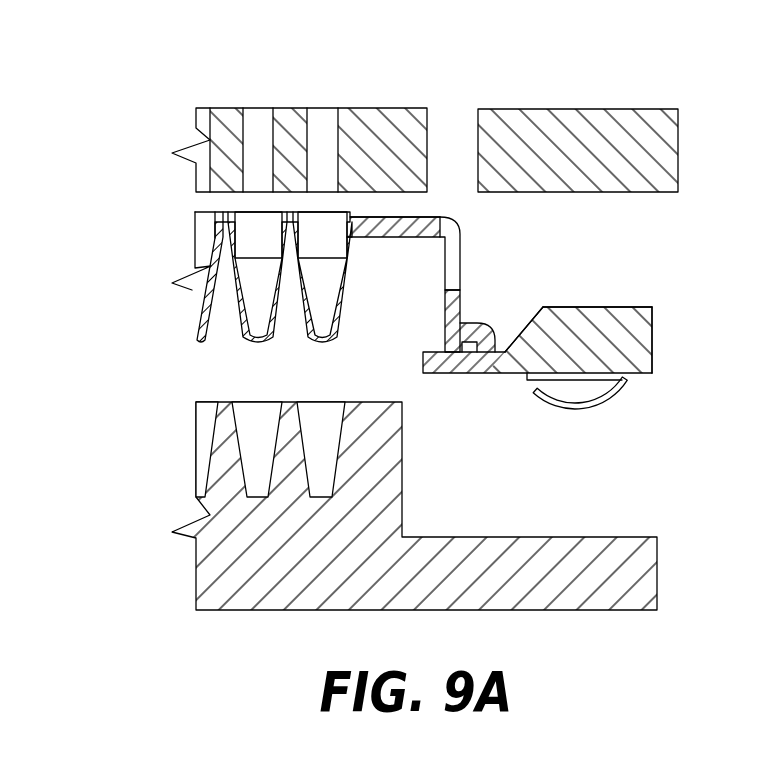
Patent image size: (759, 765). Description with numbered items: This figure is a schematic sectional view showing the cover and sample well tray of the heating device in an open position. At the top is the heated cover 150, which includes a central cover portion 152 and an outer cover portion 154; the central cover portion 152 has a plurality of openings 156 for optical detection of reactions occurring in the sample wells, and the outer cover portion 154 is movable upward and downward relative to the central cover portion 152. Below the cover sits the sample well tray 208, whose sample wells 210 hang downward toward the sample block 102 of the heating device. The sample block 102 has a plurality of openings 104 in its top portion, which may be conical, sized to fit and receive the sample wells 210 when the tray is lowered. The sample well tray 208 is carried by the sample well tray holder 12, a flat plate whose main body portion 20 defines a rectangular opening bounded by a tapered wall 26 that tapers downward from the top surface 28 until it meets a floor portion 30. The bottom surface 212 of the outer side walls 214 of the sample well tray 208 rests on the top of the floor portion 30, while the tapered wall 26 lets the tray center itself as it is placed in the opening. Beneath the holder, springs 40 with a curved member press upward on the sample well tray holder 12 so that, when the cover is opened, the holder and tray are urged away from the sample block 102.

The sample well tray holder 12 is at (668, 346).
The main body portion 20 is at (612, 320).
The tapered wall 26 is at (524, 328).
The top surface 28 is at (583, 307).
The floor portion 30 is at (437, 354).
The springs 40 is at (612, 421).
The sample block 102 is at (186, 557).
The openings 104 is at (325, 417).
The heated cover 150 is at (186, 112).
The central cover portion 152 is at (388, 128).
The outer cover portion 154 is at (562, 125).
The openings 156 is at (325, 123).
The sample well tray 208 is at (185, 246).
The sample wells 210 is at (200, 288).
The bottom surface 212 is at (446, 358).
The outer side walls 214 is at (460, 292).